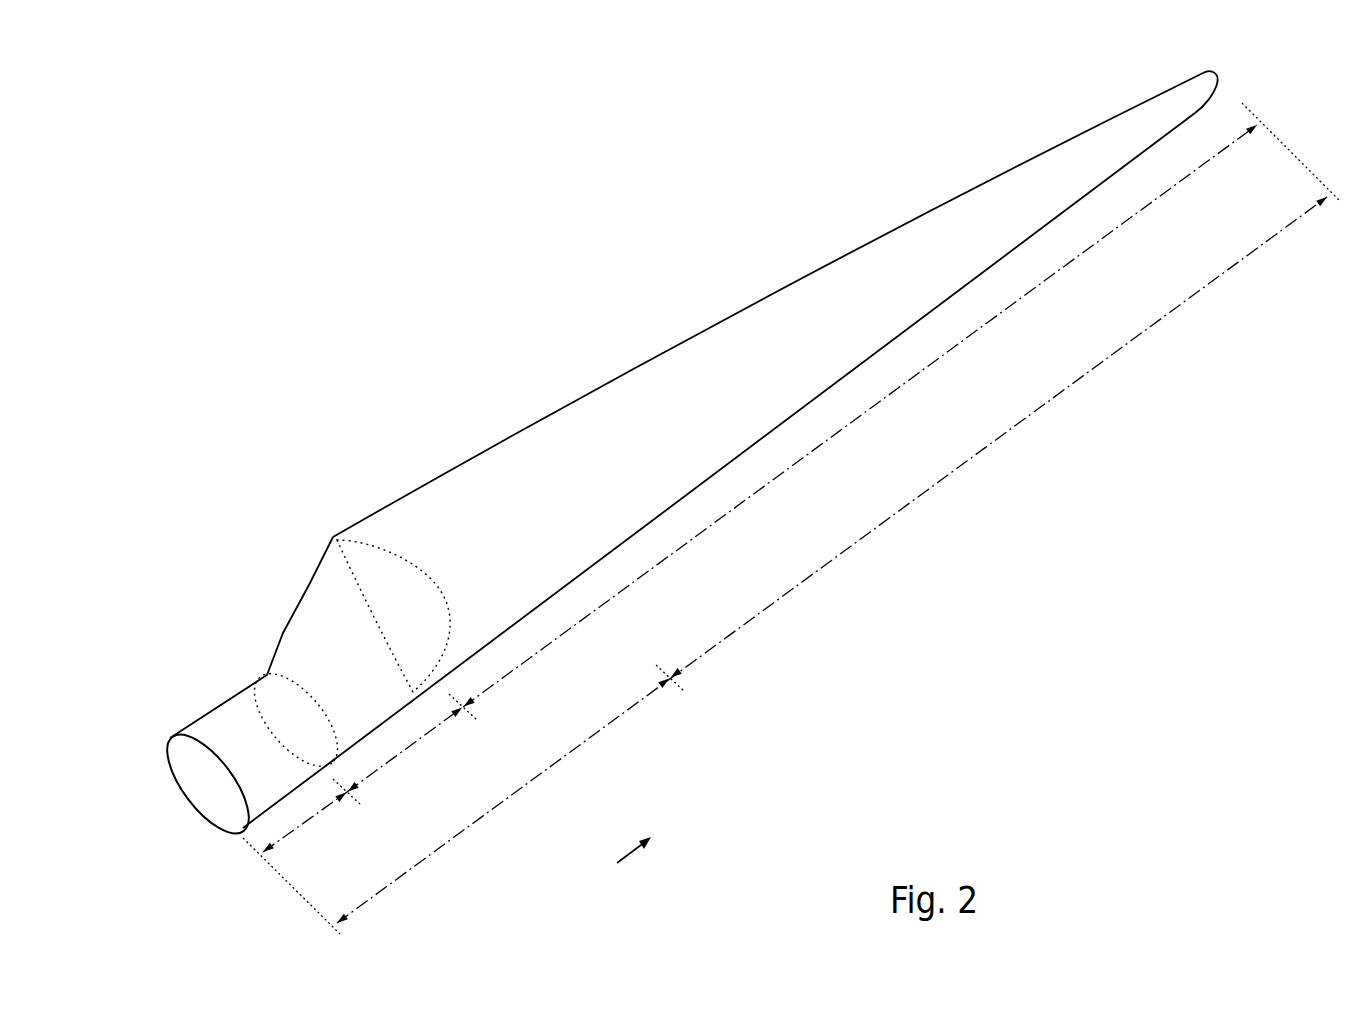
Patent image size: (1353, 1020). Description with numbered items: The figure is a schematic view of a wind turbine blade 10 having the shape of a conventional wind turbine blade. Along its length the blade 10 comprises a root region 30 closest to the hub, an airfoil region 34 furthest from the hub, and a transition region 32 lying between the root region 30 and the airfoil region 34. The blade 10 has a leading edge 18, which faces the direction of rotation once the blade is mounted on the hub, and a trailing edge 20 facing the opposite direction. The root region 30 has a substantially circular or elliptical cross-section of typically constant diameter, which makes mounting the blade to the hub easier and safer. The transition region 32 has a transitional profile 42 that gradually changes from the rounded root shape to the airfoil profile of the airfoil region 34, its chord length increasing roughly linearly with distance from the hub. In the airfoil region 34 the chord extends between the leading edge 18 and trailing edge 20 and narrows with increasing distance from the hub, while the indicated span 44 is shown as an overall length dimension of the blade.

The wind turbine blade 10 is at (506, 308).
The leading edge 18 is at (900, 340).
The trailing edge 20 is at (905, 224).
The root region 30 is at (312, 822).
The transition region 32 is at (413, 740).
The airfoil region 34 is at (783, 473).
The transitional profile 42 is at (637, 819).
The blade length 44 is at (818, 570).